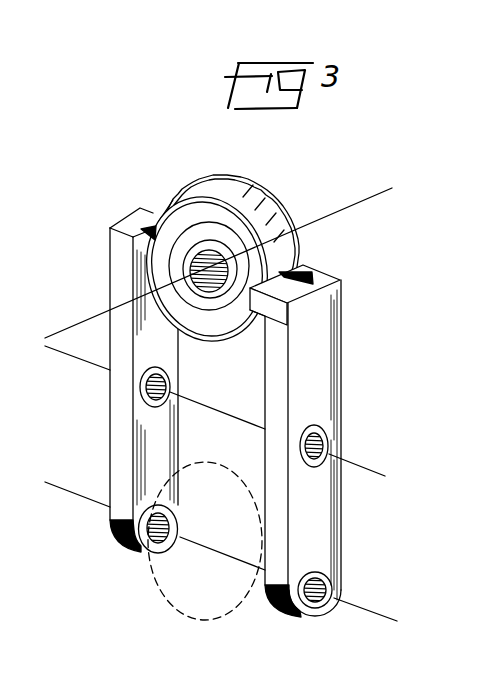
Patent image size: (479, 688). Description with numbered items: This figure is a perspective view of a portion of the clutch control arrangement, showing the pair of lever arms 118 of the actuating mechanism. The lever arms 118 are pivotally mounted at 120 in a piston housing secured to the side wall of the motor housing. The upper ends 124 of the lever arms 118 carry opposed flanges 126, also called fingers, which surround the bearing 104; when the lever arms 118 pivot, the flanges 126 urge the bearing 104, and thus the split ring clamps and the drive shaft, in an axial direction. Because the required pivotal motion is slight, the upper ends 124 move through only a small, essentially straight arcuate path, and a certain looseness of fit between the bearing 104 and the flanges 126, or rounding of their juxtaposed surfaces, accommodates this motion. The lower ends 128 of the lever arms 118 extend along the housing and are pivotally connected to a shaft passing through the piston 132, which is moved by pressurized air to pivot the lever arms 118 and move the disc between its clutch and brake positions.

The bearing 104 is at (273, 212).
The lever arms 118 is at (118, 297).
The pivotal mounting 120 is at (172, 388).
The upper ends 124 is at (152, 207).
The opposed flanges 126 is at (110, 230).
The lower ends 128 is at (338, 589).
The piston 132 is at (162, 587).